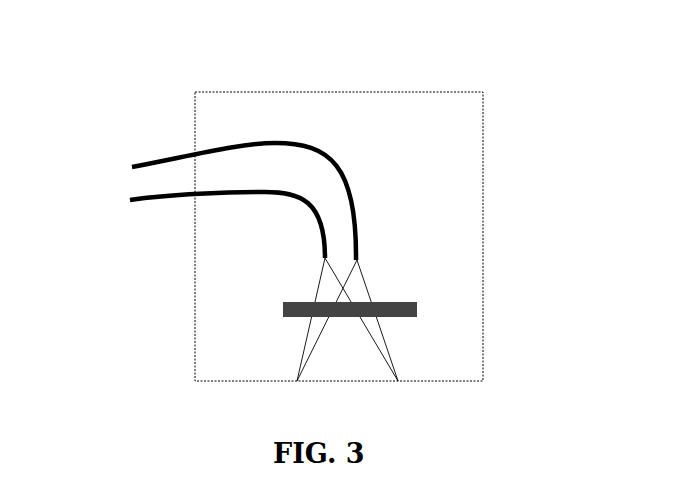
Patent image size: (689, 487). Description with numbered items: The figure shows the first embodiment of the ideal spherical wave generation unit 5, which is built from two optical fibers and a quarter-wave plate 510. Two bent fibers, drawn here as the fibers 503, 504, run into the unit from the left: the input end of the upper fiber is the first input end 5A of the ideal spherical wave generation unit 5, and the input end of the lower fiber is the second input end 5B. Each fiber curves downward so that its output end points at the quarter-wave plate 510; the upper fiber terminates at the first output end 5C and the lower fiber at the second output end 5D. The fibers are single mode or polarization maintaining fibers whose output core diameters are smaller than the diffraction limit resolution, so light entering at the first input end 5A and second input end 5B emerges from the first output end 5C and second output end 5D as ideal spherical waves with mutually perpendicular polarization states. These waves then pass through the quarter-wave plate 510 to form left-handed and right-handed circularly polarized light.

The ideal spherical wave generation unit 5 is at (237, 92).
The first input end 5A is at (132, 167).
The second input end 5B is at (130, 200).
The third optical fiber 503 is at (315, 148).
The fourth optical fiber 504 is at (315, 207).
The first output end 5C is at (357, 262).
The second output end 5D is at (323, 258).
The quarter-wave plate 510 is at (392, 317).